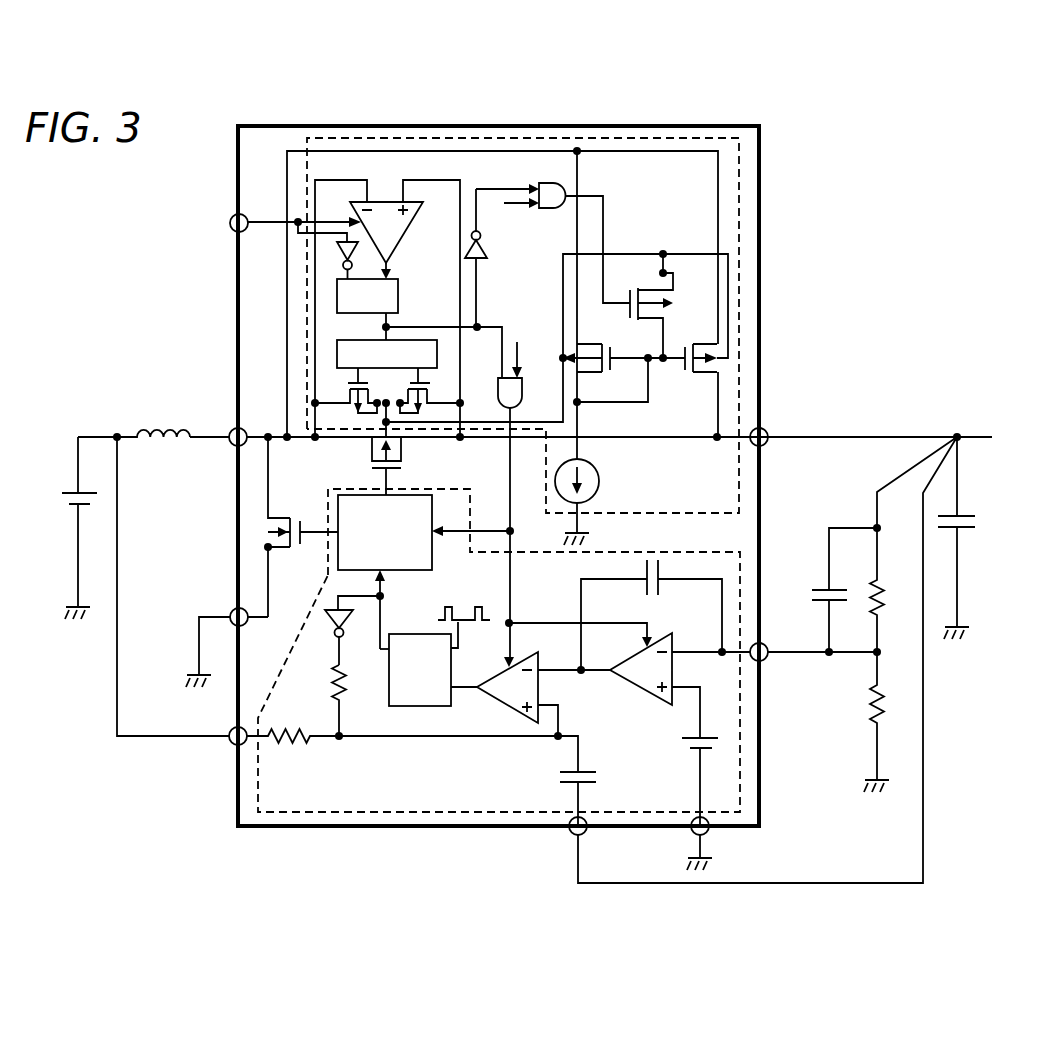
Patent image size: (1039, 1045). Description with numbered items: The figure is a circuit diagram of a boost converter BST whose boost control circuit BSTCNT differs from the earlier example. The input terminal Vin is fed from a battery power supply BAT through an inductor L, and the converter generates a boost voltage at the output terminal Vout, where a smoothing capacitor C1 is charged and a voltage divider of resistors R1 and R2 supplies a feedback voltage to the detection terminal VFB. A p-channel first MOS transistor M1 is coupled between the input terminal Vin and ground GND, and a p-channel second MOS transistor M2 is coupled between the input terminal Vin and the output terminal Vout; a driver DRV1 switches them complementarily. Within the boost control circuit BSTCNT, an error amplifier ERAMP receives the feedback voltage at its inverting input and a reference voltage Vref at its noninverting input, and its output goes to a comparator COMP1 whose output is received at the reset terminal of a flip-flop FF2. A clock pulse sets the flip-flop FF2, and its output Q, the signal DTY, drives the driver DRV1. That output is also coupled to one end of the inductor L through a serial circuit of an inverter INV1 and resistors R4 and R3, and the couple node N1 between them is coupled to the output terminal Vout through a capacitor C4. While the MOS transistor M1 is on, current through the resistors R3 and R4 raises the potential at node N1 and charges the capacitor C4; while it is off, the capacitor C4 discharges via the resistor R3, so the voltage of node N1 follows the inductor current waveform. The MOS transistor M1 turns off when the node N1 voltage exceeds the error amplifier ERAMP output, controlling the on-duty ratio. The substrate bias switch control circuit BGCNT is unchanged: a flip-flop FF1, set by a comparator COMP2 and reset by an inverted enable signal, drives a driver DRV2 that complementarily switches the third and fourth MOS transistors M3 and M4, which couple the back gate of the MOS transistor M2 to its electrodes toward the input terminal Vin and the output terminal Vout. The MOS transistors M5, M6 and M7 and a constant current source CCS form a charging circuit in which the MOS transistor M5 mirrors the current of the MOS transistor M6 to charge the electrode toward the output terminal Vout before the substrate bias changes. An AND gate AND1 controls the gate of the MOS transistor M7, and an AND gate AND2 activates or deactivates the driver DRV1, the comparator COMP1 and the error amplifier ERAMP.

The boost converter BST is at (766, 144).
The substrate bias switch control circuit BGCNT is at (740, 218).
The boost control circuit BSTCNT is at (740, 563).
The comparator COMP2 is at (386, 210).
The flip-flop FF1 is at (337, 292).
The AND gate AND1 is at (567, 192).
The AND gate AND2 is at (540, 395).
The driver DRV2 is at (387, 354).
The first MOS transistor M1 is at (284, 518).
The second MOS transistor M2 is at (403, 457).
The third MOS transistor M3 is at (346, 390).
The fourth MOS transistor M4 is at (423, 402).
The MOS transistor M5 is at (690, 370).
The MOS transistor M6 is at (613, 373).
The MOS transistor M7 is at (625, 294).
The constant current source CCS is at (600, 480).
The output terminal Vout is at (765, 430).
The input terminal Vin is at (232, 446).
The inductor L is at (160, 427).
The battery power supply BAT is at (67, 488).
The ground GND is at (511, 700).
The driver DRV1 is at (424, 532).
The inverter INV1 is at (328, 620).
The signal DTY is at (383, 616).
The flip-flop FF2 is at (415, 706).
The comparator COMP1 is at (507, 707).
The error amplifier ERAMP is at (637, 688).
The detection terminal VFB is at (763, 660).
The reference voltage Vref is at (718, 746).
The capacitor C4 is at (592, 785).
The resistor R3 is at (393, 749).
The couple node N1 is at (339, 742).
The resistor R4 is at (323, 700).
The smoothing capacitor C1 is at (969, 532).
The resistor R1 is at (863, 590).
The resistor R2 is at (892, 716).